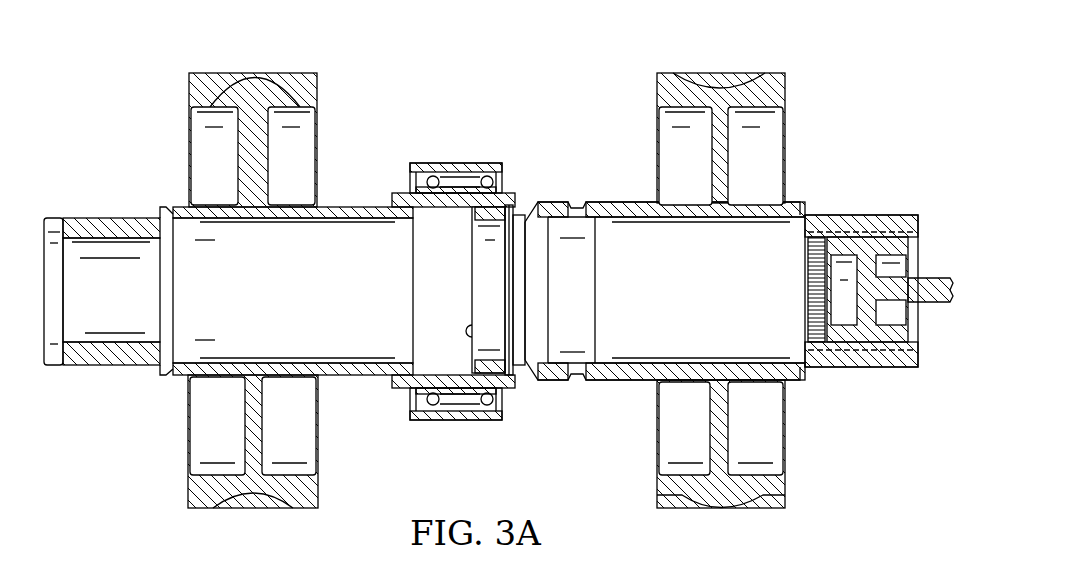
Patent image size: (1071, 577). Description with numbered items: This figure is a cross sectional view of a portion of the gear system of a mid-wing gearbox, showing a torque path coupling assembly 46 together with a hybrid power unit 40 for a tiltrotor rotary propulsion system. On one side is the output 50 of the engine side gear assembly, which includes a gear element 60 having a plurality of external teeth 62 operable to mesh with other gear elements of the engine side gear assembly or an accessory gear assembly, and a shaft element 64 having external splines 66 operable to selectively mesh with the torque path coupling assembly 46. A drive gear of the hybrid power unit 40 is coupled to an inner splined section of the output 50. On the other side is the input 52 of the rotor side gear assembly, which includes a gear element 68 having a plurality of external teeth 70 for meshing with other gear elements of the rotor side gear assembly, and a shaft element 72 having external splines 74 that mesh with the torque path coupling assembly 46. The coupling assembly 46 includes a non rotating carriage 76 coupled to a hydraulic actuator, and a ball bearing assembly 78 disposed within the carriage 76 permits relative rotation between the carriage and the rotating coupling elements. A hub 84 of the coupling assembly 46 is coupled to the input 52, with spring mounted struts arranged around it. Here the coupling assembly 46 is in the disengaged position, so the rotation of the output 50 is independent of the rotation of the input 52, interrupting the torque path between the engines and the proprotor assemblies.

The hybrid power unit 40 is at (935, 290).
The torque path coupling assembly 46 is at (461, 164).
The output 50 is at (855, 225).
The input 52 is at (107, 218).
The gear element 60 is at (778, 86).
The external teeth 62 is at (752, 113).
The shaft element 64 is at (665, 264).
The external splines 66 is at (555, 202).
The gear element 68 is at (205, 96).
The external teeth 70 is at (225, 114).
The shaft element 72 is at (365, 207).
The external splines 74 is at (440, 210).
The non rotating carriage 76 is at (441, 420).
The ball bearing assembly 78 is at (484, 420).
The hub 84 is at (485, 298).